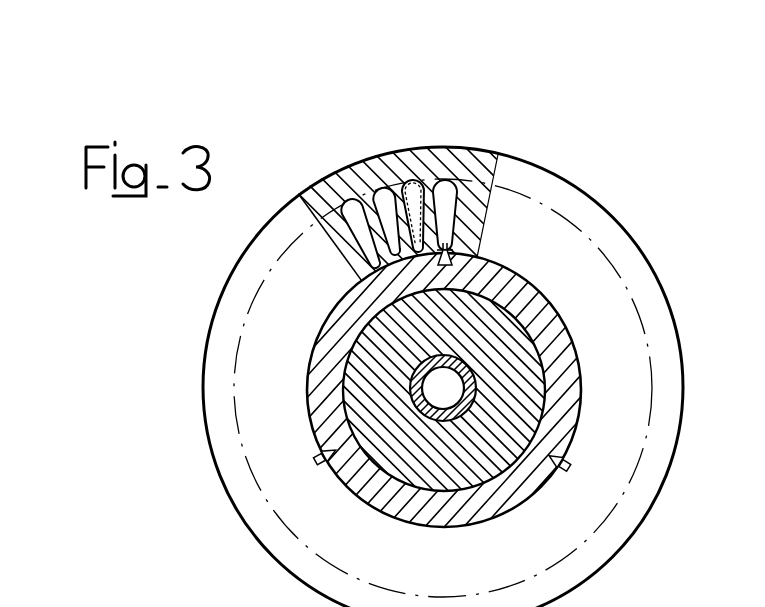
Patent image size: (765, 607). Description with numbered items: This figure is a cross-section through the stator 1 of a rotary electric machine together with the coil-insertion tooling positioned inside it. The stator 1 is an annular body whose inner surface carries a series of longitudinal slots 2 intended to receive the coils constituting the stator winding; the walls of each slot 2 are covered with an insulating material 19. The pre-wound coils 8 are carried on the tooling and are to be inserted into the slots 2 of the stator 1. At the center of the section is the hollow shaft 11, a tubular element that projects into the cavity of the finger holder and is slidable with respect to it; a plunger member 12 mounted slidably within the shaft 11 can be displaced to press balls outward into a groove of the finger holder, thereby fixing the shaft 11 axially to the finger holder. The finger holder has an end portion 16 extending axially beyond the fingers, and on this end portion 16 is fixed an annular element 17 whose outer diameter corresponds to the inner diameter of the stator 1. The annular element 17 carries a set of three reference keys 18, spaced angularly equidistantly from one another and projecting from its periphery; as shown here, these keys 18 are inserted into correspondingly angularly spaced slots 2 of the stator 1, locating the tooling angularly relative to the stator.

The stator 1 is at (306, 208).
The slots 2 is at (349, 198).
The pre-wound coils 8 is at (553, 464).
The hollow shaft 11 is at (476, 396).
The plunger member 12 is at (445, 398).
The end portion 16 is at (505, 332).
The annular element 17 is at (563, 367).
The reference keys 18 is at (448, 256).
The insulating material 19 is at (423, 171).